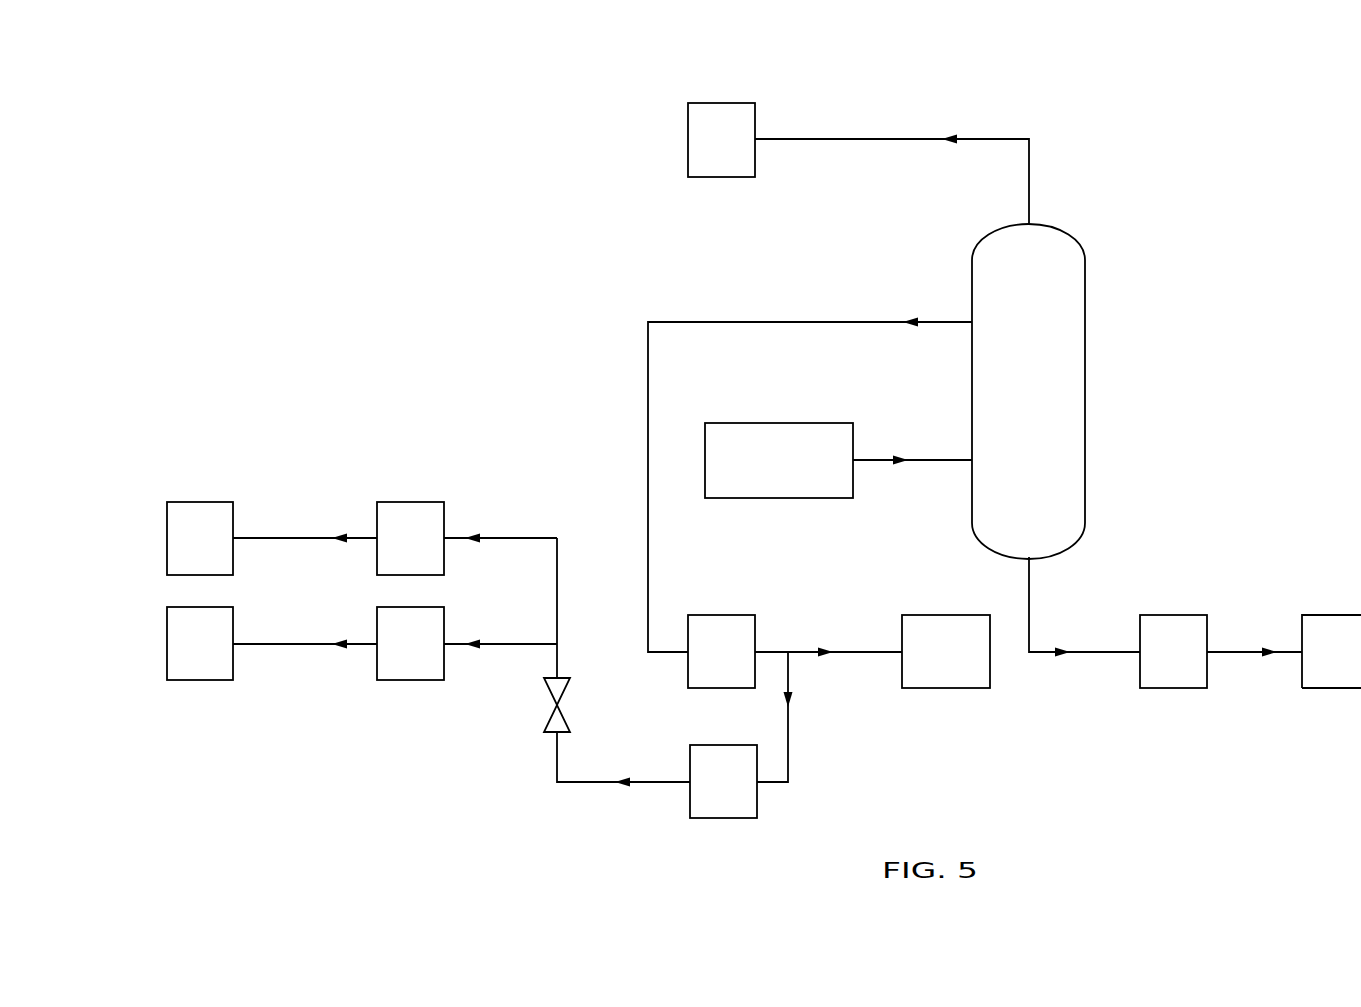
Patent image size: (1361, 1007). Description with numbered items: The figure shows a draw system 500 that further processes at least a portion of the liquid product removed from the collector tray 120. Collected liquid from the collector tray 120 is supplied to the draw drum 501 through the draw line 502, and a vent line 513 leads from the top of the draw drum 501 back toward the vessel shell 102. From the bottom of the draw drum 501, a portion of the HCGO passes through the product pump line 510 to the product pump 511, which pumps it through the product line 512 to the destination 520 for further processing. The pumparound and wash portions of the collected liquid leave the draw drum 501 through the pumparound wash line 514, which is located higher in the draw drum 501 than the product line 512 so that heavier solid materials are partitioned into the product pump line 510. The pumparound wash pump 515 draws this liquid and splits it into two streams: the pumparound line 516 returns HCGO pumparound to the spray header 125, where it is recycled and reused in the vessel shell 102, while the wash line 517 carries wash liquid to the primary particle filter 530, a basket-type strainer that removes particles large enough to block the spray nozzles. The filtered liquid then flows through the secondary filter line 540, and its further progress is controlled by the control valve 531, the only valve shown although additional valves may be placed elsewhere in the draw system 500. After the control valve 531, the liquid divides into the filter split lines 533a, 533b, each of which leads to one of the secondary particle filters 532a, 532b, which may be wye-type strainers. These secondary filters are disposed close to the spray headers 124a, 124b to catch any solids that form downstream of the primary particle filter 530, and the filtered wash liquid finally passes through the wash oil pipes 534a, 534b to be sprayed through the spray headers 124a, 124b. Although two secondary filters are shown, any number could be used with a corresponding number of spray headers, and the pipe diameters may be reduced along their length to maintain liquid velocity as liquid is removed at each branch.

The draw system 500 is at (816, 100).
The draw drum 501 is at (1006, 403).
The vessel shell 102 is at (743, 153).
The vent line 513 is at (875, 138).
The pumparound wash line 514 is at (836, 320).
The collector tray 120 is at (757, 473).
The draw line 502 is at (943, 462).
The pumparound wash pump 515 is at (743, 665).
The pumparound line 516 is at (866, 650).
The spray header 125 is at (968, 665).
The wash line 517 is at (788, 743).
The primary particle filter 530 is at (745, 795).
The secondary filter line 540 is at (582, 784).
The control valve 531 is at (560, 705).
The filter split line 533a is at (512, 537).
The filter split line 533b is at (510, 645).
The secondary particle filter 532a is at (383, 552).
The secondary particle filter 532b is at (383, 658).
The wash oil pipe 534a is at (285, 537).
The wash oil pipe 534b is at (284, 645).
The spray header 124a is at (173, 552).
The spray header 124b is at (173, 658).
The product pump line 510 is at (1100, 654).
The product pump 511 is at (1195, 665).
The product line 512 is at (1225, 654).
The destination 520 is at (1316, 665).